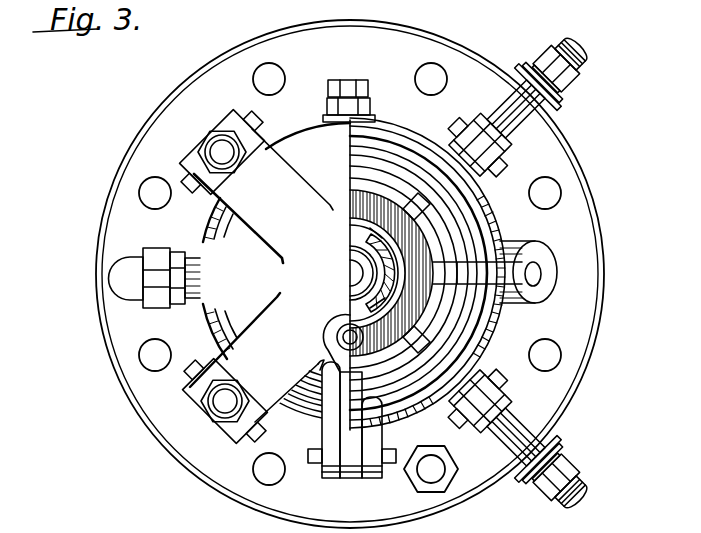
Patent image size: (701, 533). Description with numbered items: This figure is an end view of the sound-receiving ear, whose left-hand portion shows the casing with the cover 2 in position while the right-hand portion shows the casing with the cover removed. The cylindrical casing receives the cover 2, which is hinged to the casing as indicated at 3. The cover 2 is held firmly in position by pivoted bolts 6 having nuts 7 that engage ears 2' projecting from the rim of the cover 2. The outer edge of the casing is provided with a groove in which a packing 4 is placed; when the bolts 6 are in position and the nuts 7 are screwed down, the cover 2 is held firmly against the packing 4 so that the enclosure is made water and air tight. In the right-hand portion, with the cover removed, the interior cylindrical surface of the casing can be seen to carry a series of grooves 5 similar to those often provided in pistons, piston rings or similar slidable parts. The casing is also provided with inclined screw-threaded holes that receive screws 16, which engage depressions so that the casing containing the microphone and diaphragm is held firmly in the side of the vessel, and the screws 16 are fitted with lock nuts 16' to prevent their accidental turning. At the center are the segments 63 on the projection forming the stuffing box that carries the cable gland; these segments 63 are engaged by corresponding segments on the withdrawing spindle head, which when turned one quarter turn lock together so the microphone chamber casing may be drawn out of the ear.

The cover 2 is at (261, 275).
The ears 2' is at (211, 276).
The hinge 3 is at (350, 482).
The packing 4 is at (477, 325).
The grooves 5 is at (57, 298).
The pivoted bolts 6 is at (220, 143).
The nuts 7 is at (235, 138).
The screws 16 is at (155, 266).
The lock nuts 16' is at (181, 260).
The segments 63 is at (385, 305).